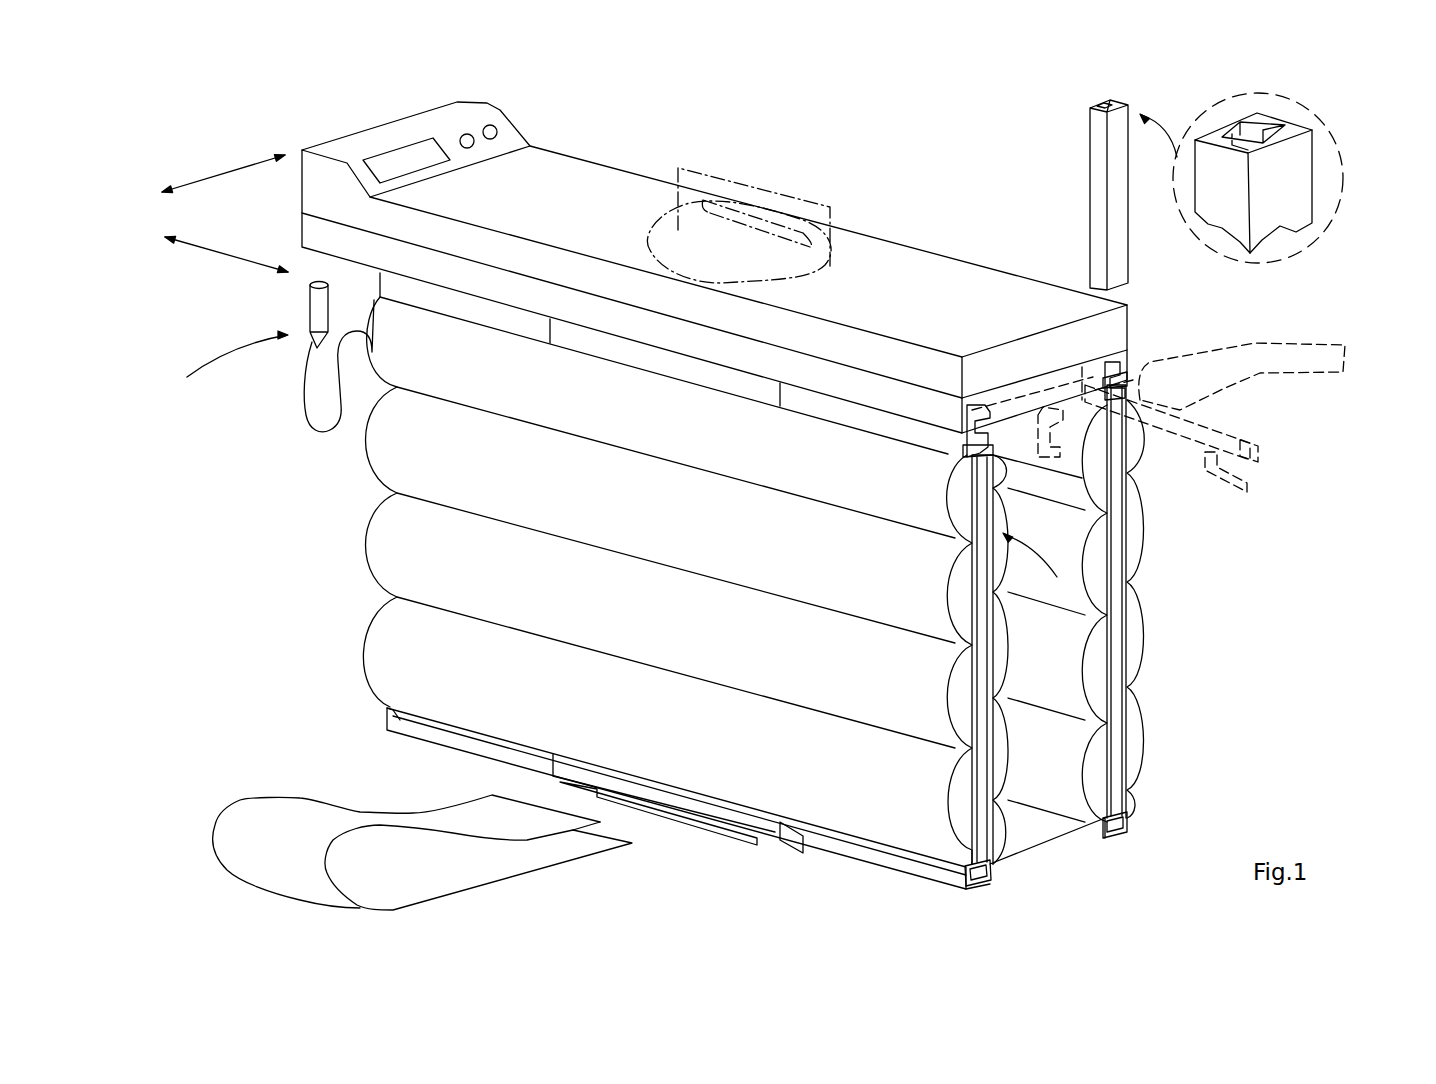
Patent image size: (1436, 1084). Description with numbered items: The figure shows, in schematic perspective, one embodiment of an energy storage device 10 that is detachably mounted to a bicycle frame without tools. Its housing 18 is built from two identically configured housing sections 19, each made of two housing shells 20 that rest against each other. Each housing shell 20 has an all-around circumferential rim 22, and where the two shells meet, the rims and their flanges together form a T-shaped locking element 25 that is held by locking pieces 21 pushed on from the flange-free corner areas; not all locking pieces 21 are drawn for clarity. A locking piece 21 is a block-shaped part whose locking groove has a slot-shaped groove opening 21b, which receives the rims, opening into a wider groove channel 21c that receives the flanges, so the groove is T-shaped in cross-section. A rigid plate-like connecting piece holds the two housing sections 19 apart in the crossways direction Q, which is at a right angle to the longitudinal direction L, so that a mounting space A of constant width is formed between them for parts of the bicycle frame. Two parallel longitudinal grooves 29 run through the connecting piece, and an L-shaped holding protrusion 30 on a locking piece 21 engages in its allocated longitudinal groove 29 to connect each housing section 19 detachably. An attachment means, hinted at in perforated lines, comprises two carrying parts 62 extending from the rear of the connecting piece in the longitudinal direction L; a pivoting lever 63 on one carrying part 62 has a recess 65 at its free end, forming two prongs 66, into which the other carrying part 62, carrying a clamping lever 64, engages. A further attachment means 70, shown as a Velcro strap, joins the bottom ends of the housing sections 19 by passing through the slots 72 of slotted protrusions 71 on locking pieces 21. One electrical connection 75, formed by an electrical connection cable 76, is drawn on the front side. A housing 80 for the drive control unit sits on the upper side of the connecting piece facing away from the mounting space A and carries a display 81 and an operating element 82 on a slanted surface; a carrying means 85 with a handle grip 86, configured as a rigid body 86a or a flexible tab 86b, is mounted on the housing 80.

The energy storage device 10 is at (760, 172).
The housing 18 is at (1263, 568).
The housing section 19 is at (352, 561).
The housing shell 20 is at (953, 860).
The locking piece 21 is at (477, 307).
The groove opening 21b is at (1233, 132).
The groove channel 21c is at (1267, 130).
The rim 22 is at (997, 863).
The locking element 25 is at (1138, 718).
The longitudinal groove 29 is at (978, 400).
The holding protrusion 30 is at (970, 448).
The carrying part 62 is at (1023, 397).
The pivoting lever 63 is at (1183, 493).
The clamping lever 64 is at (1337, 375).
The recess 65 is at (1217, 468).
The prong 66 is at (1253, 443).
The attachment means 70 is at (500, 897).
The slotted protrusion 71 is at (763, 840).
The slot 72 is at (683, 823).
The electrical connection 75 is at (221, 362).
The electrical connection cable 76 is at (303, 420).
The housing 80 is at (977, 287).
The display 81 is at (412, 155).
The operating element 82 is at (500, 138).
The carrying means 85 is at (707, 162).
The handle grip 86 is at (795, 229).
The rigid body 86a is at (790, 193).
The flexible tab 86b is at (847, 243).
The crossways direction Q is at (217, 175).
The longitudinal direction L is at (222, 257).
The mounting space A is at (1037, 565).